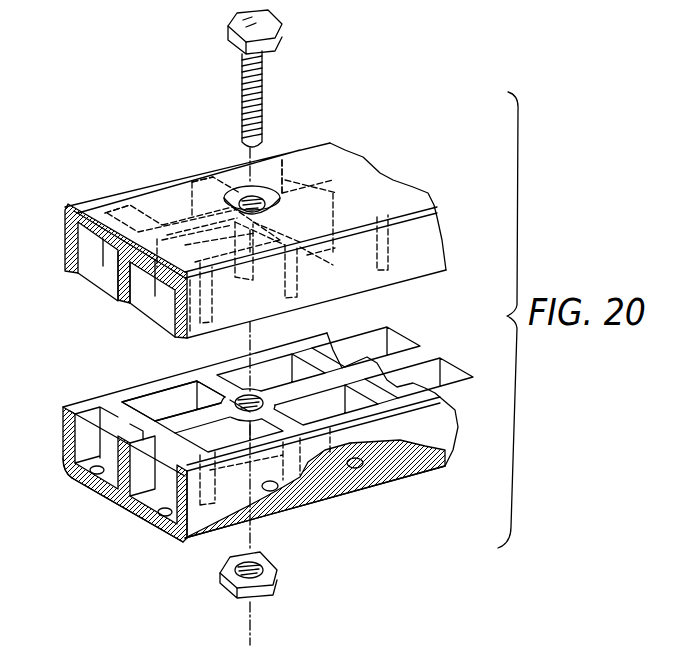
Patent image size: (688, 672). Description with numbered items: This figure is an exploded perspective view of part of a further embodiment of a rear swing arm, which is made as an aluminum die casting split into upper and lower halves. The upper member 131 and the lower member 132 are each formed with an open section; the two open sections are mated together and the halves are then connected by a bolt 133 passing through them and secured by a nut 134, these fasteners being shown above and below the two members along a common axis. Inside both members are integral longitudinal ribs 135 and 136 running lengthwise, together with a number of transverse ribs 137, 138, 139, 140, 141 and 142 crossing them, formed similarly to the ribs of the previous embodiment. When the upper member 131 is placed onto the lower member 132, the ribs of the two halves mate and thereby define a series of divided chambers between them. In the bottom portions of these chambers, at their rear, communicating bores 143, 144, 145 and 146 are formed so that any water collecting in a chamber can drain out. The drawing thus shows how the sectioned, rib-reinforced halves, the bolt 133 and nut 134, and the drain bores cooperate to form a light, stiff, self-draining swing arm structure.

The upper member 131 is at (430, 228).
The lower member 132 is at (455, 430).
The bolt 133 is at (283, 24).
The nut 134 is at (278, 582).
The longitudinal rib 135 is at (127, 290).
The longitudinal rib 136 is at (378, 365).
The transverse rib 137 is at (132, 190).
The transverse rib 138 is at (220, 158).
The transverse rib 139 is at (284, 158).
The transverse rib 140 is at (130, 402).
The transverse rib 141 is at (213, 383).
The transverse rib 142 is at (322, 367).
The communicating bore 143 is at (80, 480).
The communicating bore 144 is at (150, 522).
The communicating bore 145 is at (280, 492).
The communicating bore 146 is at (362, 470).